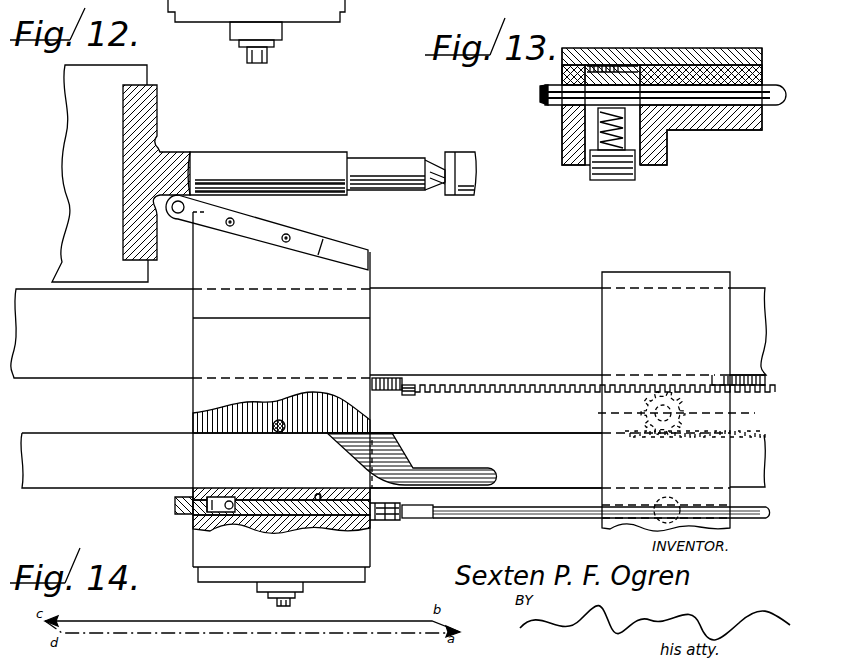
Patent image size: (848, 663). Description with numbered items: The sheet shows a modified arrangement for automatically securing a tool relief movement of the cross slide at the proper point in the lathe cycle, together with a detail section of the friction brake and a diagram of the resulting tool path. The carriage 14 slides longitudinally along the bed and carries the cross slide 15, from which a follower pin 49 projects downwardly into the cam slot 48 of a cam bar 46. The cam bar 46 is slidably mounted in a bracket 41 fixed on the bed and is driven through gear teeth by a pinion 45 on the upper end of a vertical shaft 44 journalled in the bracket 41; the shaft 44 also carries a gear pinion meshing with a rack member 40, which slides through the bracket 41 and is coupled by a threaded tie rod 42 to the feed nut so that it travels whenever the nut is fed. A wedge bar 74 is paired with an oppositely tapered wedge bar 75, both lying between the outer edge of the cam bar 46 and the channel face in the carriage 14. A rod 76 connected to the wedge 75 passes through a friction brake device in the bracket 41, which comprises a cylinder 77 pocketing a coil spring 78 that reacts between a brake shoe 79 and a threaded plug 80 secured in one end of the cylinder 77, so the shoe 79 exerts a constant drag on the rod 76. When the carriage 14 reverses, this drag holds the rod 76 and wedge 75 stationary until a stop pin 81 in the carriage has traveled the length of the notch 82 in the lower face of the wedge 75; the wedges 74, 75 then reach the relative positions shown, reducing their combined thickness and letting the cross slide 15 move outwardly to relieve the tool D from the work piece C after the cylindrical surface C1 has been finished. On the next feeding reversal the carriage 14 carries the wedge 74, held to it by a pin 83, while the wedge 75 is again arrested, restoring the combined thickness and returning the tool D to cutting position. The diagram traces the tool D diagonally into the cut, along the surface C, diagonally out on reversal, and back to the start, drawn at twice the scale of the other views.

In FIG. 12, the work piece C is at (288, 158).
In FIG. 12, the cylindrical surface C1 is at (320, 196).
In FIG. 12, the tool D is at (181, 216).
In FIG. 14, the carriage 14 is at (370, 556).
In FIG. 14, the cross slide 15 is at (355, 346).
In FIG. 14, the rack member 40 is at (527, 380).
In FIG. 14, the bracket 41 is at (610, 333).
In FIG. 14, the threaded tie rod 42 is at (380, 388).
In FIG. 14, the shaft 44 is at (662, 413).
In FIG. 14, the pinion 45 is at (735, 413).
In FIG. 14, the cam bar 46 is at (448, 438).
In FIG. 14, the cam slot 48 is at (390, 452).
In FIG. 14, the follower pin 49 is at (290, 424).
In FIG. 14, the wedge bar 74 is at (248, 490).
In FIG. 14, the wedge bar 75 is at (175, 503).
In FIG. 13, the rod 76 is at (545, 95).
In FIG. 14, the rod 76 is at (558, 518).
In FIG. 13, the cylinder 77 is at (618, 78).
In FIG. 14, the cylinder 77 is at (667, 497).
In FIG. 13, the coil spring 78 is at (640, 143).
In FIG. 13, the brake shoe 79 is at (585, 132).
In FIG. 13, the threaded plug 80 is at (600, 170).
In FIG. 14, the stop pin 81 is at (228, 500).
In FIG. 14, the notch 82 is at (200, 523).
In FIG. 14, the pin 83 is at (320, 494).